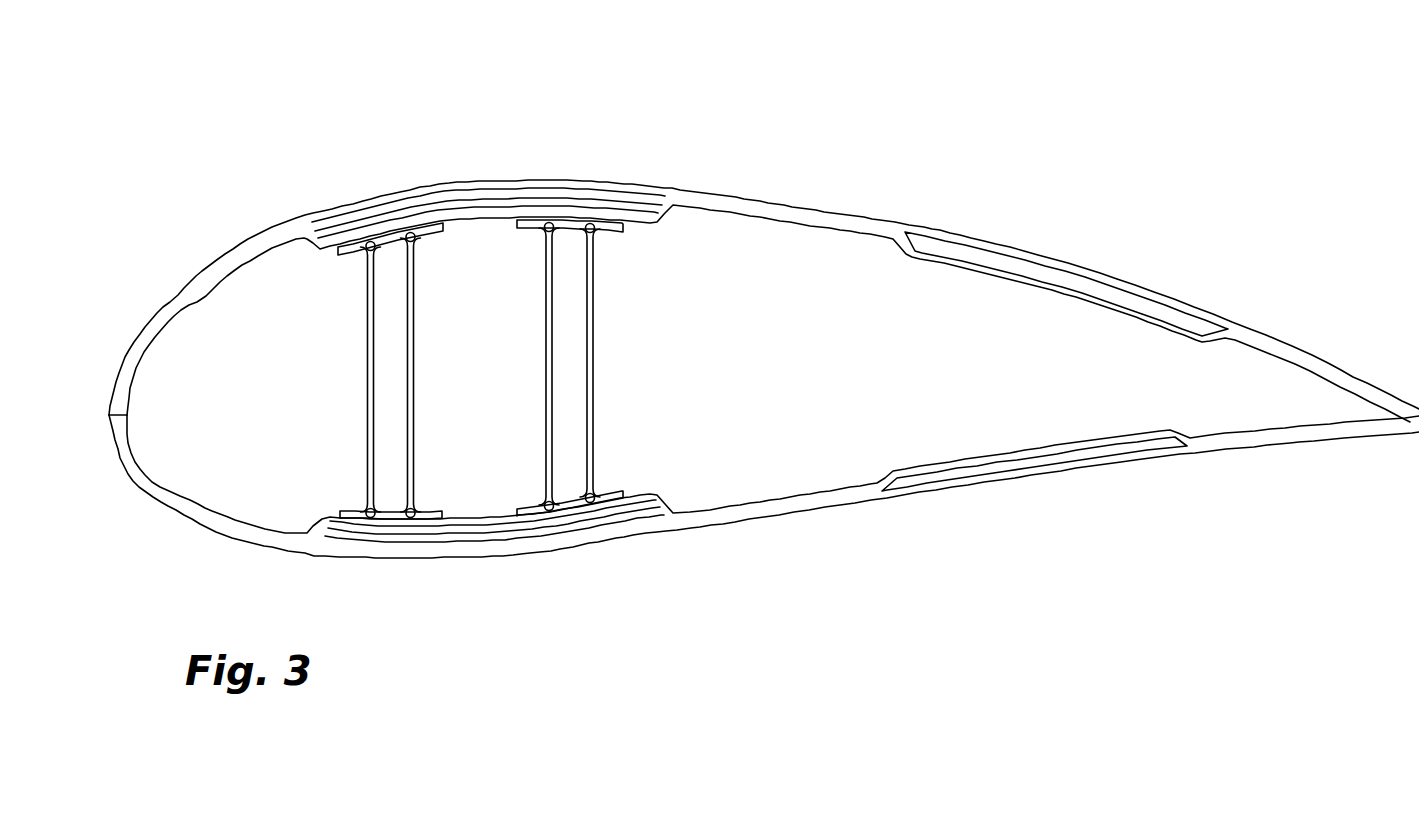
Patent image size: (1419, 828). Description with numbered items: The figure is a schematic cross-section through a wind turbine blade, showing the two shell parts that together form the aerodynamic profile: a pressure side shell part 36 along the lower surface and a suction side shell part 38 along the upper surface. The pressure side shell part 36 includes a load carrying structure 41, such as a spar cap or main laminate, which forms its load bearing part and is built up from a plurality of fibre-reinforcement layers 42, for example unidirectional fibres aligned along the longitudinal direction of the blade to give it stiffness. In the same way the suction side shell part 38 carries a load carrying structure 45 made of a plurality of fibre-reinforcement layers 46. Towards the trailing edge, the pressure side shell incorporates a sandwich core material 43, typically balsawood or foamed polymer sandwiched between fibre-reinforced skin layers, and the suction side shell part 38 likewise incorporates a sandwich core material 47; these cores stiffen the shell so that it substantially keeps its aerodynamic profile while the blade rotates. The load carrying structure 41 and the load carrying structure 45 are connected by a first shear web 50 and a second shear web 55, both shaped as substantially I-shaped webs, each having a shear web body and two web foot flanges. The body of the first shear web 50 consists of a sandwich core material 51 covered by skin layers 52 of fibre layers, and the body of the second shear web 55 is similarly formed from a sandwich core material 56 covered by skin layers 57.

The pressure side shell part 36 is at (845, 508).
The suction side shell part 38 is at (820, 204).
The load carrying structure 41 is at (494, 574).
The fibre-reinforcement layers 42 is at (500, 545).
The sandwich core material 43 is at (1050, 468).
The load carrying structure 45 is at (488, 148).
The fibre-reinforcement layers 46 is at (596, 212).
The sandwich core material 47 is at (1047, 268).
The first shear web 50 is at (413, 371).
The sandwich core material 51 is at (405, 408).
The skin layers 52 is at (415, 300).
The second shear web 55 is at (608, 368).
The sandwich core material 56 is at (583, 402).
The skin layers 57 is at (597, 326).